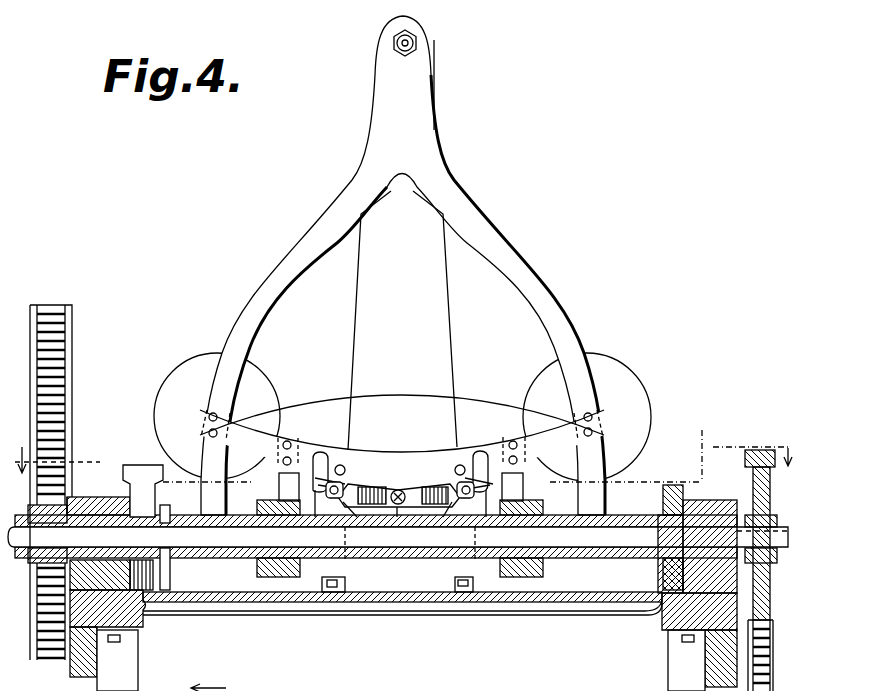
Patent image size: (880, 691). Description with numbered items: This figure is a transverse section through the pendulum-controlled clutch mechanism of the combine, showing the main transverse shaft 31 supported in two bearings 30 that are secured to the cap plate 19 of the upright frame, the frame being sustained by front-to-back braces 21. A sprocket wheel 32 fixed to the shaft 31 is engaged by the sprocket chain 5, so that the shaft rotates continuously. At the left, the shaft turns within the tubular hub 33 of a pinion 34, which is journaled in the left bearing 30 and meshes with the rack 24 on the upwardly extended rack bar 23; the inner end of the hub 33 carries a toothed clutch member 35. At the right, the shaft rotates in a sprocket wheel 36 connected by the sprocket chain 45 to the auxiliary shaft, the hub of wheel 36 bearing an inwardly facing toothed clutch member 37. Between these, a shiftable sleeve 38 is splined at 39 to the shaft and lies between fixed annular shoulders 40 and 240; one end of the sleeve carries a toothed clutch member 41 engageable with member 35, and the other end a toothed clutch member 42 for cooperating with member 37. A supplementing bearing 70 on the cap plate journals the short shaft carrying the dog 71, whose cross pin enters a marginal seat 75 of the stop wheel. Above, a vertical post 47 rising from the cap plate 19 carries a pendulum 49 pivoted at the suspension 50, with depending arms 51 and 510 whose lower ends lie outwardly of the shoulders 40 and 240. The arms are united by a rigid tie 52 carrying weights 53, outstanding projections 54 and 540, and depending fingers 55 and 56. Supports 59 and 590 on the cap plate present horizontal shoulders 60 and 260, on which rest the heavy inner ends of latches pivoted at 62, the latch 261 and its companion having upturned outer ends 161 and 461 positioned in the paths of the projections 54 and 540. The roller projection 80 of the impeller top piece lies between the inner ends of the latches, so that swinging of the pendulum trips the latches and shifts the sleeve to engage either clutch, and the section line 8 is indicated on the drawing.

The pendulum suspension 50 is at (418, 41).
The pendulum 49 is at (412, 117).
The pendulum arm 51 is at (508, 251).
The pendulum arm 510 is at (318, 241).
The weights 53 is at (188, 368).
The vertical post 47 is at (440, 346).
The projection 54 is at (428, 454).
The rigid tie 52 is at (388, 447).
The projection 540 is at (343, 466).
The upturned outer end of latch 161 is at (481, 454).
The upturned outer end of latch 461 is at (318, 453).
The latch pivot 62 is at (404, 473).
The latch 261 is at (375, 466).
The roller projection 80 is at (398, 508).
The shoulder of support 60 is at (453, 507).
The depending finger 55 is at (272, 487).
The depending finger 56 is at (527, 487).
The toothed clutch member 35 is at (398, 537).
The pinion 34 is at (47, 534).
The shoulder of support 260 is at (337, 507).
The main transverse shaft 31 is at (264, 542).
The annular shoulder 40 is at (520, 578).
The annular shoulder 240 is at (280, 578).
The support 590 is at (405, 553).
The shiftable sleeve 38 is at (447, 557).
The spline 39 is at (403, 560).
The support 59 is at (453, 560).
The cap plate 19 is at (573, 603).
The rack 24 is at (50, 305).
The rack bar 23 is at (82, 363).
The tubular hub 33 is at (100, 503).
The bearing 30 is at (78, 497).
The supplementing bearing 70 is at (160, 573).
The marginal seat 75 is at (143, 598).
The front-to-back brace 21 is at (128, 673).
The dog 71 is at (140, 470).
The toothed clutch member 41 is at (168, 517).
The sprocket wheel 36 is at (663, 503).
The toothed clutch member 37 is at (652, 560).
The toothed clutch member 42 is at (633, 558).
The sprocket chain 45 is at (668, 484).
The sprocket wheel 32 is at (750, 452).
The sprocket chain 5 is at (402, 449).
The section line 8 is at (208, 677).